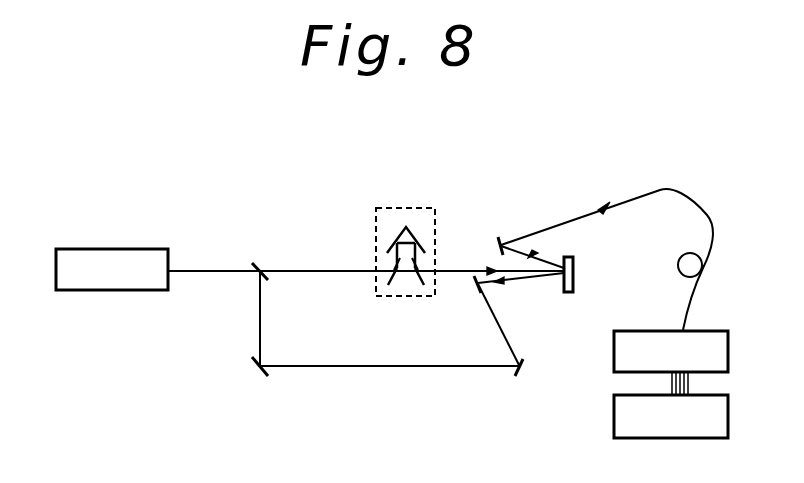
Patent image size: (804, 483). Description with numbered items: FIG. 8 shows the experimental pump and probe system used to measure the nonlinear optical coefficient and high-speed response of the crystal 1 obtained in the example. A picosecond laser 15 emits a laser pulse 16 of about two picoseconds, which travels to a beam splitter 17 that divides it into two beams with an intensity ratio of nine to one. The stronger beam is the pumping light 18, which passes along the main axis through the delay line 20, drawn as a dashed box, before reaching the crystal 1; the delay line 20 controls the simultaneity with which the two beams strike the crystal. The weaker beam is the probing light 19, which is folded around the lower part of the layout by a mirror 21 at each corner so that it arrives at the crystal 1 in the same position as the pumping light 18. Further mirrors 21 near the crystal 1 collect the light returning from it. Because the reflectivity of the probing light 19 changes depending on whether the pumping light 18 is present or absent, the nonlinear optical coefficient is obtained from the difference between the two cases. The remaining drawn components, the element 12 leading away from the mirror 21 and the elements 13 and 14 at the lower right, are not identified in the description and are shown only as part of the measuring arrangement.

The crystal 1 is at (574, 293).
The optical fiber 12 is at (604, 206).
The photodetector 13 is at (614, 351).
The signal processor 14 is at (614, 417).
The picosecond laser 15 is at (107, 290).
The laser pulse 16 is at (208, 272).
The beam splitter 17 is at (263, 266).
The pumping light 18 is at (318, 272).
The probing light 19 is at (350, 367).
The delay line 20 is at (412, 208).
The mirror 21 is at (498, 240).